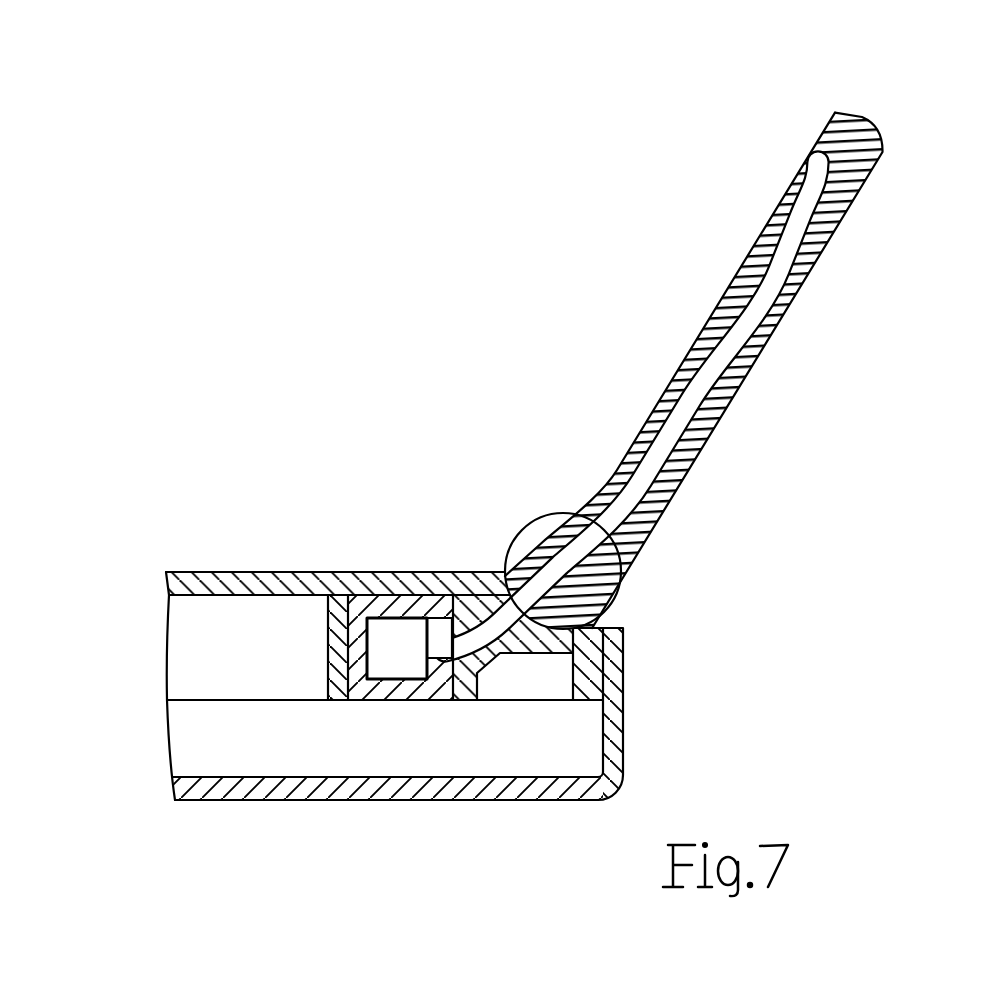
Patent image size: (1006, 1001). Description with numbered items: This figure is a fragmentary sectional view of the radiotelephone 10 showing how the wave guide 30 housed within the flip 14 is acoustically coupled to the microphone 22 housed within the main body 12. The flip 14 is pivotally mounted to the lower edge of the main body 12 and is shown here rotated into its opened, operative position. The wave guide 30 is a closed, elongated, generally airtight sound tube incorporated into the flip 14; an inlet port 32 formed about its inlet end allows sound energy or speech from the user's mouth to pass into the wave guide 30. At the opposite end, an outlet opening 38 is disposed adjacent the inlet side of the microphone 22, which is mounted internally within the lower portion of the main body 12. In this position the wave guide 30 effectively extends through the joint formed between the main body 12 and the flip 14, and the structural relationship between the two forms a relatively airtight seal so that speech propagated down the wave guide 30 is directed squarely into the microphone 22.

The radiotelephone 10 is at (337, 256).
The main body 12 is at (287, 513).
The flip 14 is at (898, 116).
The microphone 22 is at (396, 632).
The wave guide 30 is at (640, 485).
The inlet port 32 is at (805, 158).
The outlet opening 38 is at (490, 613).